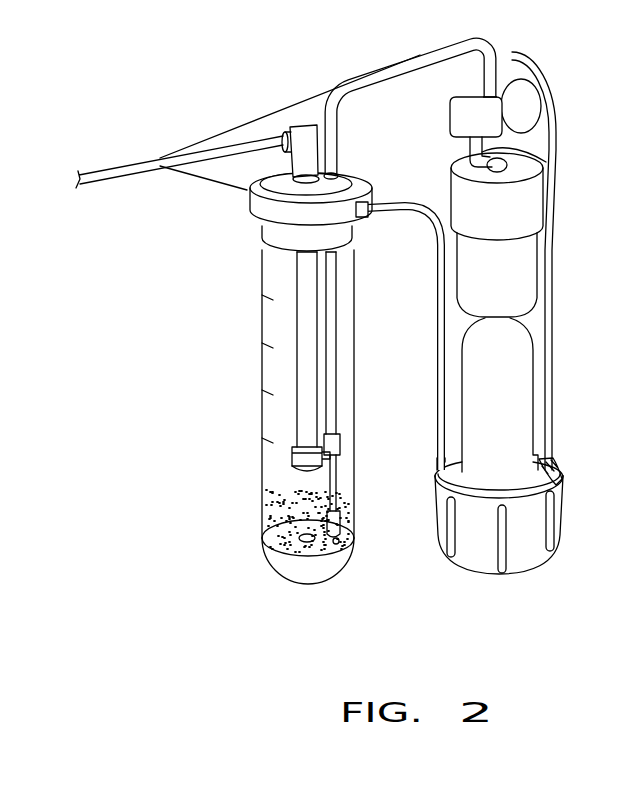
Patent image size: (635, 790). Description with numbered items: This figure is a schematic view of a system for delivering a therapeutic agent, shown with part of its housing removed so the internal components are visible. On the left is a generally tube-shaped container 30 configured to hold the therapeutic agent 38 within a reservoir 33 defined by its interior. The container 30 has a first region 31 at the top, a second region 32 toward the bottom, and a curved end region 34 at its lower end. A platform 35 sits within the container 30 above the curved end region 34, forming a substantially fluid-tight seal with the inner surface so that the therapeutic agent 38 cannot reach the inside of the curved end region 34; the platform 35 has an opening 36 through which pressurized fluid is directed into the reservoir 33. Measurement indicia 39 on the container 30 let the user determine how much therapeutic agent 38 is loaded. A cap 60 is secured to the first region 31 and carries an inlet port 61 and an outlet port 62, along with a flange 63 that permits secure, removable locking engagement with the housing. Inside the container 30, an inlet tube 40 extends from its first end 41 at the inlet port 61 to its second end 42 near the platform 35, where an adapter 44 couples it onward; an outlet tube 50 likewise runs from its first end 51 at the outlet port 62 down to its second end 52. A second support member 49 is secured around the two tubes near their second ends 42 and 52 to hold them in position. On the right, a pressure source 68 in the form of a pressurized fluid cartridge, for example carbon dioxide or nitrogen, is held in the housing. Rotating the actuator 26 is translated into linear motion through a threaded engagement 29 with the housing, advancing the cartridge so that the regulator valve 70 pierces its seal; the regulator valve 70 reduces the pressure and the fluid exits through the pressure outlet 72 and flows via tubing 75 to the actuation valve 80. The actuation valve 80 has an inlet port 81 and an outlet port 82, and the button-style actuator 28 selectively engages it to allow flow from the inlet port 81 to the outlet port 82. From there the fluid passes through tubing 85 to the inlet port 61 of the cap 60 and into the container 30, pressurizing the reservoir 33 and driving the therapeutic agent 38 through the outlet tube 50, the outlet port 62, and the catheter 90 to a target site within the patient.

The actuator 26 is at (523, 553).
The actuator 28 is at (556, 92).
The threaded engagement 29 is at (555, 466).
The container 30 is at (249, 373).
The first region 31 is at (243, 239).
The second region 32 is at (220, 525).
The reservoir 33 is at (347, 392).
The curved end region 34 is at (320, 583).
The platform 35 is at (267, 532).
The opening 36 is at (300, 541).
The therapeutic agent 38 is at (340, 480).
The measurement indicia 39 is at (272, 440).
The inlet tube 40 is at (346, 334).
The first end 41 is at (330, 253).
The second end 42 is at (340, 510).
The adapter 44 is at (341, 531).
The second support member 49 is at (285, 472).
The outlet tube 50 is at (288, 323).
The first end 51 is at (305, 253).
The second end 52 is at (293, 448).
The cap 60 is at (243, 188).
The inlet port 61 is at (343, 169).
The outlet port 62 is at (300, 133).
The flange 63 is at (366, 212).
The pressure source 68 is at (512, 381).
The regulator valve 70 is at (530, 252).
The pressure outlet 72 is at (507, 170).
The tubing 75 is at (535, 160).
The actuation valve 80 is at (434, 120).
The inlet port 81 is at (468, 151).
The outlet port 82 is at (482, 92).
The tubing 85 is at (403, 72).
The catheter 90 is at (121, 158).